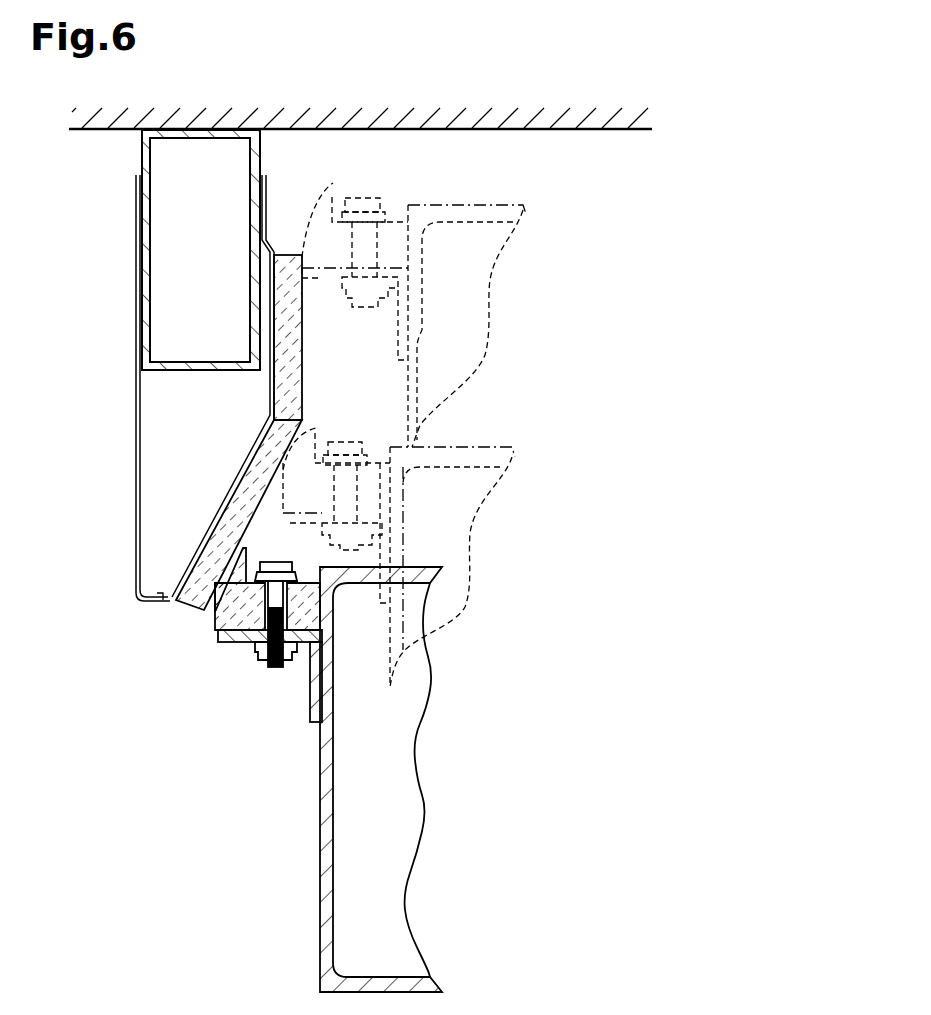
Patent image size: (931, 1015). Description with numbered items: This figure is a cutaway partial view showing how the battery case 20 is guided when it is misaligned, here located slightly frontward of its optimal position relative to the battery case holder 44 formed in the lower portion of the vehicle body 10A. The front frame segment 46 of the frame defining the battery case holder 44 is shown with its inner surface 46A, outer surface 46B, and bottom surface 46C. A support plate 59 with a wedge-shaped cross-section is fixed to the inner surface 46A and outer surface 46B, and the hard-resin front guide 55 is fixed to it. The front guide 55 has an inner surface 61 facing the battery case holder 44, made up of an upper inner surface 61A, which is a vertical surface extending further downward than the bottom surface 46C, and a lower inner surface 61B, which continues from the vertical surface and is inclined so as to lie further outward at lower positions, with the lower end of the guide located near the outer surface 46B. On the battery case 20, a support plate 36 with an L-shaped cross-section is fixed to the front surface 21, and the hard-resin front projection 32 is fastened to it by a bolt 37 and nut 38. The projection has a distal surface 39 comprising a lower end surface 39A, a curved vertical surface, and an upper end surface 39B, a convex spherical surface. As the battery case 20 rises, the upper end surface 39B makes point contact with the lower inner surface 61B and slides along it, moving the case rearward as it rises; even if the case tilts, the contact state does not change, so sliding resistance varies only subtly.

The vehicle body 10A is at (618, 131).
The battery case 20 is at (470, 200).
The front surface 21 is at (320, 829).
The front projection 32 is at (337, 191).
The support plate 36 is at (310, 683).
The bolt 37 is at (273, 668).
The nut 38 is at (260, 645).
The distal surface 39 is at (70, 545).
The lower end surface 39A is at (213, 615).
The upper end surface 39B is at (224, 570).
The battery case holder 44 is at (556, 330).
The front frame segment 46 is at (136, 262).
The inner surface 46A is at (262, 148).
The outer surface 46B is at (140, 158).
The bottom surface 46C is at (160, 372).
The front guide 55 is at (304, 350).
The support plate 59 is at (138, 485).
The inner surface 61 is at (195, 398).
The upper inner surface 61A is at (272, 398).
The lower inner surface 61B is at (270, 493).